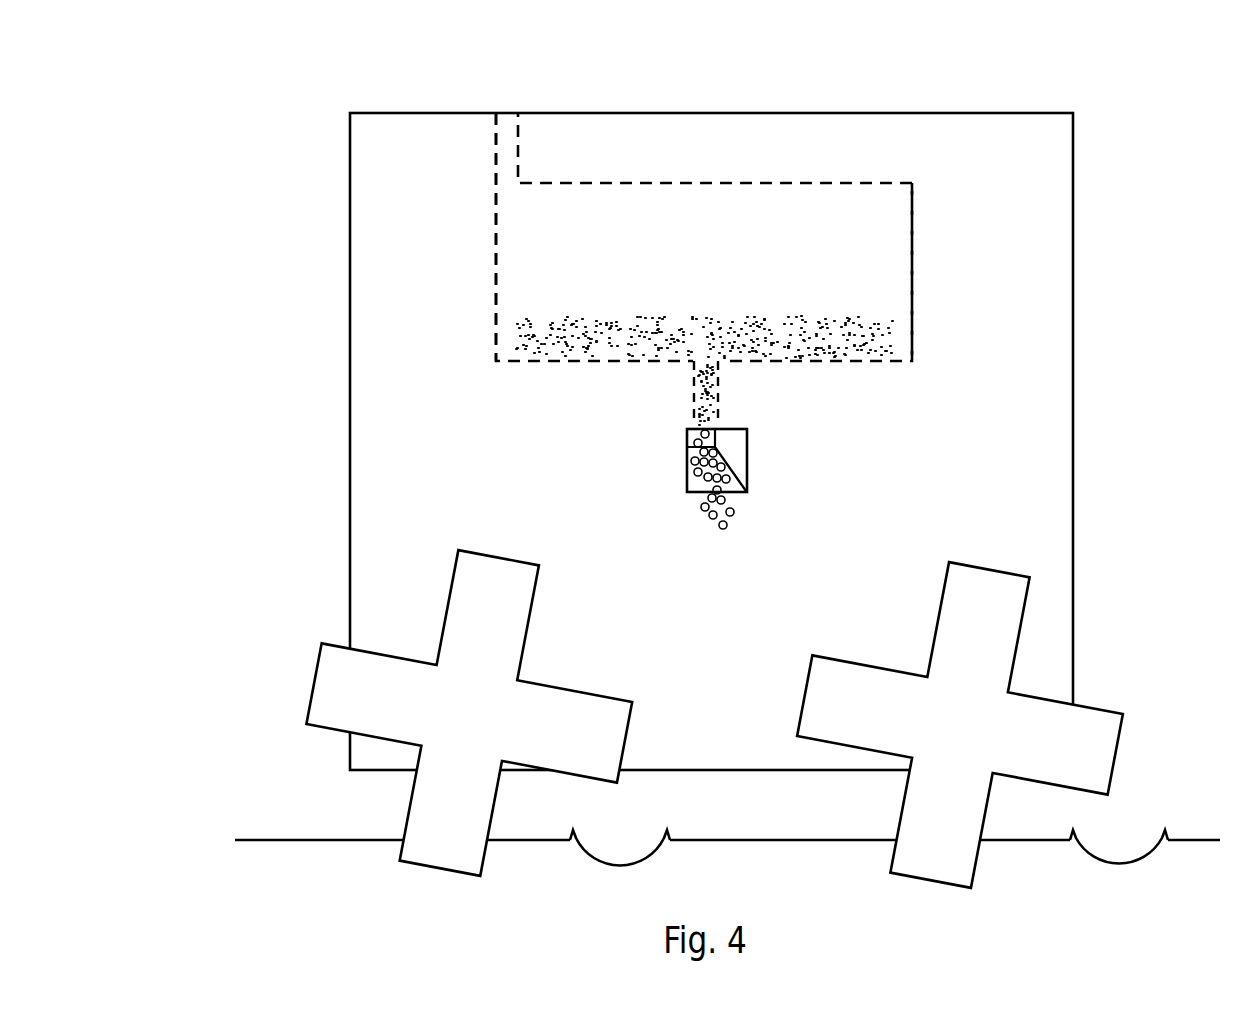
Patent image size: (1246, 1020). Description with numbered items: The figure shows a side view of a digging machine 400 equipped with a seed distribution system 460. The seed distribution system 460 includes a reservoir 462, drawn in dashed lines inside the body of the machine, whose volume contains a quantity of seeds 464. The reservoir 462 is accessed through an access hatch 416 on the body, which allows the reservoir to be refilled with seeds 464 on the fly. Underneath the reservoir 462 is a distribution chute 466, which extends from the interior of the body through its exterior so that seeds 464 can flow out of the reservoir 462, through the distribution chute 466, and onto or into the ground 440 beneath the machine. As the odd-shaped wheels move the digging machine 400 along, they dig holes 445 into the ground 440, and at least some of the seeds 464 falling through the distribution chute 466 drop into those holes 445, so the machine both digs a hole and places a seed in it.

The digging machine 400 is at (350, 290).
The access hatch 416 is at (506, 142).
The ground 440 is at (277, 838).
The holes 445 is at (622, 867).
The seed distribution system 460 is at (913, 155).
The reservoir 462 is at (913, 243).
The seeds 464 is at (880, 337).
The distribution chute 466 is at (728, 446).